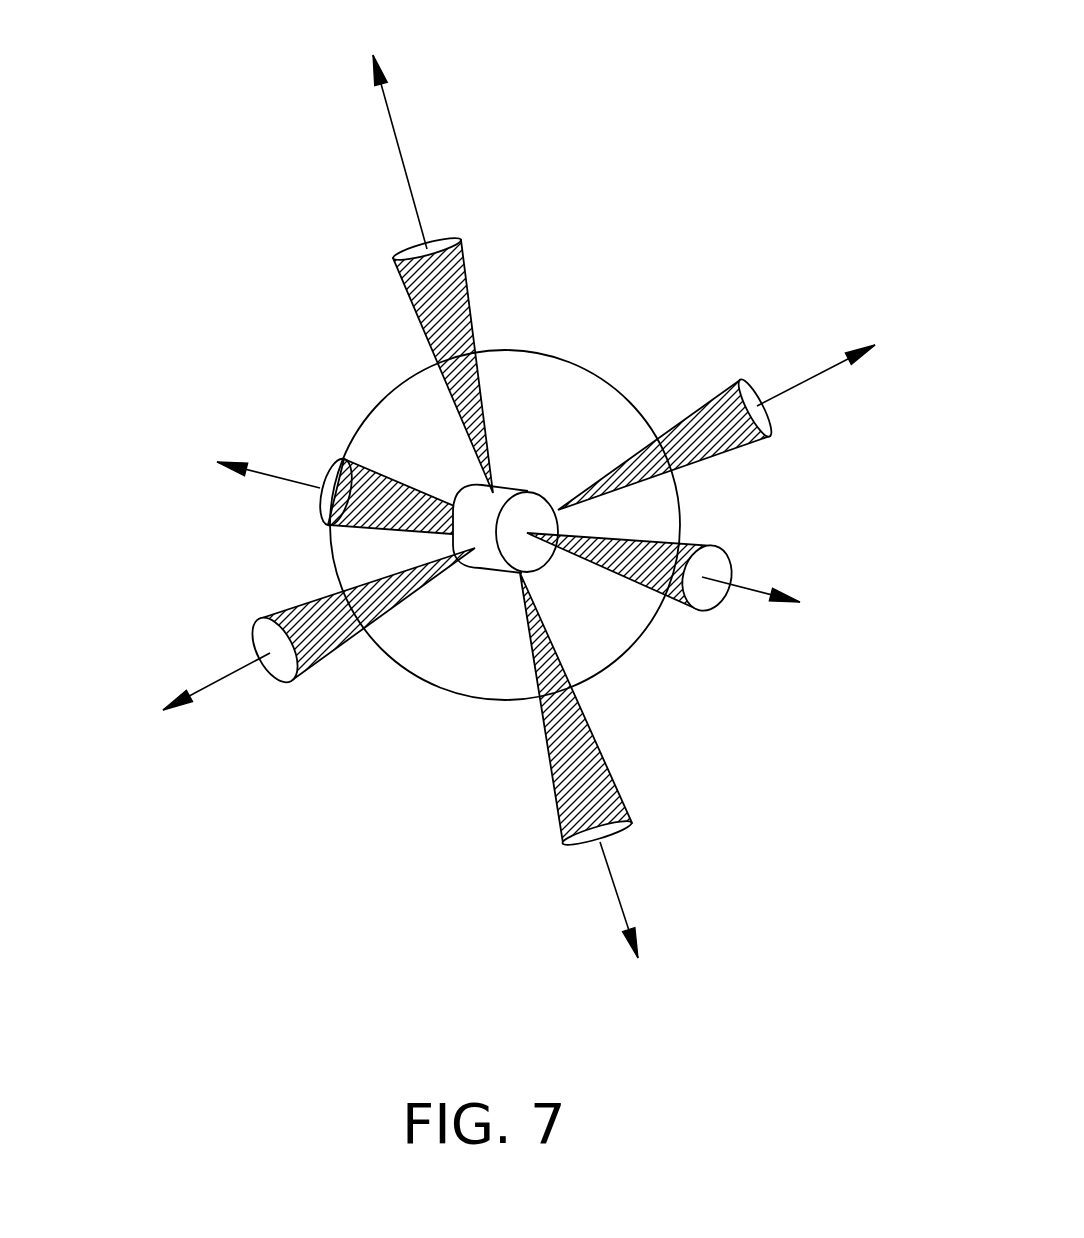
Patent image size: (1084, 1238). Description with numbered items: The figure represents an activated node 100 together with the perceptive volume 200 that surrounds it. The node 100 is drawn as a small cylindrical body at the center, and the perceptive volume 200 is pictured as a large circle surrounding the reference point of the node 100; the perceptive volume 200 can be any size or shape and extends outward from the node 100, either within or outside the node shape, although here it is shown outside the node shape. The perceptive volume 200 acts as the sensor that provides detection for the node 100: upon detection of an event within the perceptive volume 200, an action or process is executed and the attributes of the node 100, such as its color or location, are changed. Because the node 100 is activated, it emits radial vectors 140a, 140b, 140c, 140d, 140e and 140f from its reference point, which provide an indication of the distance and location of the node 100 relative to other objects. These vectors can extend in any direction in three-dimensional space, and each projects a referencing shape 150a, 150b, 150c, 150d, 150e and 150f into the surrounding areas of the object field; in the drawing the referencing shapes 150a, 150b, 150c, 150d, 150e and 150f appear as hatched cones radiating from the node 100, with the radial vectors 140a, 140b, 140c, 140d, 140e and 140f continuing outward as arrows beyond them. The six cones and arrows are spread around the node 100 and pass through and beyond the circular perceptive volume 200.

The activated node 100 is at (512, 490).
The perceptive volume 200 is at (410, 673).
The radial vector 140a is at (745, 583).
The radial vector 140b is at (612, 892).
The radial vector 140c is at (313, 486).
The radial vector 140d is at (400, 148).
The radial vector 140e is at (812, 380).
The radial vector 140f is at (222, 682).
The referencing shape 150a is at (702, 598).
The referencing shape 150b is at (612, 834).
The referencing shape 150c is at (315, 498).
The referencing shape 150d is at (428, 247).
The referencing shape 150e is at (768, 380).
The referencing shape 150f is at (255, 645).